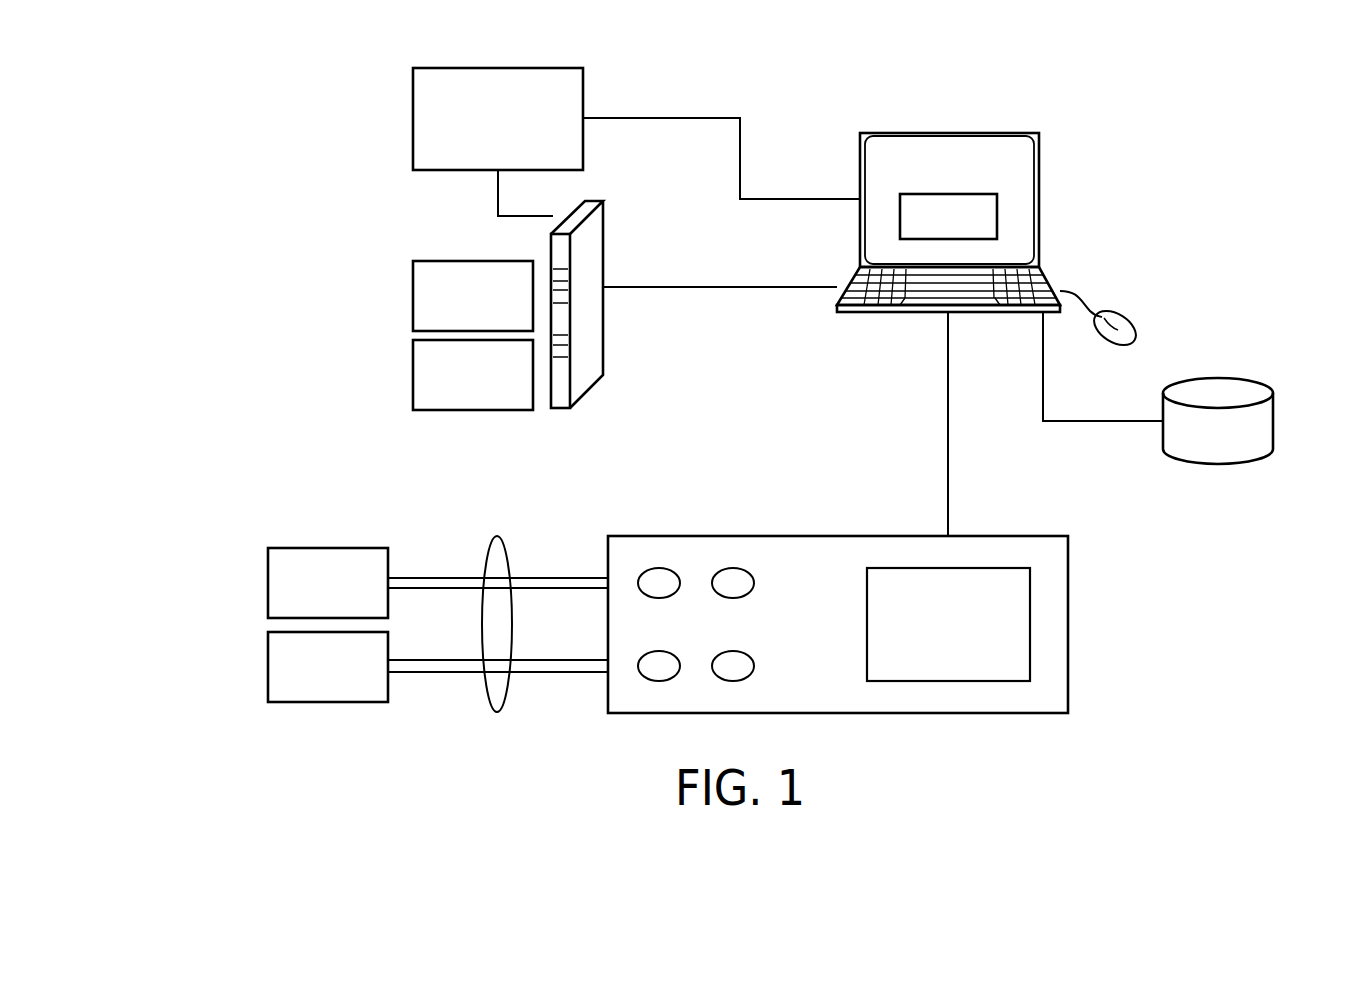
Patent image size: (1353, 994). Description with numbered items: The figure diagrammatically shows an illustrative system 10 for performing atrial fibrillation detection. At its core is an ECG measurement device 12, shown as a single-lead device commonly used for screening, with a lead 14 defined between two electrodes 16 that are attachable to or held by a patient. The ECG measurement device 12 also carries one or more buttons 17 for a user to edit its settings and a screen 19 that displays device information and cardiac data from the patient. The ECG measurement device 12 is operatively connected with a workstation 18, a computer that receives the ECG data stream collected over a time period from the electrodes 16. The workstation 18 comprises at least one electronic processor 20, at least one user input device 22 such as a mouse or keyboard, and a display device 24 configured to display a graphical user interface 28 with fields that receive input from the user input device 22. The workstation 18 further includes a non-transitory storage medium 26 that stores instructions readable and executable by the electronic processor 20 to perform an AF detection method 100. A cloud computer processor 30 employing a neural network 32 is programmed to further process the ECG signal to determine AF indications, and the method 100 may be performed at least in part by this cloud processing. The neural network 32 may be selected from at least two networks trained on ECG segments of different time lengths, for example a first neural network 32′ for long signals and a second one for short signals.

The system 10 is at (220, 130).
The AF detection method 100 is at (478, 158).
The neural network 32 is at (384, 334).
The first neural network 32′ is at (392, 296).
The cloud computer processor 30 is at (603, 342).
The workstation 18 is at (974, 222).
The display device 24 is at (1015, 155).
The graphical user interface 28 is at (934, 231).
The electronic processor 20 is at (1034, 228).
The user input device 22 is at (1130, 331).
The non-transitory storage medium 26 is at (1204, 445).
The electrodes 16 is at (313, 597).
The lead 14 is at (498, 712).
The ECG measurement device 12 is at (838, 597).
The buttons 17 is at (735, 568).
The screen 19 is at (933, 639).